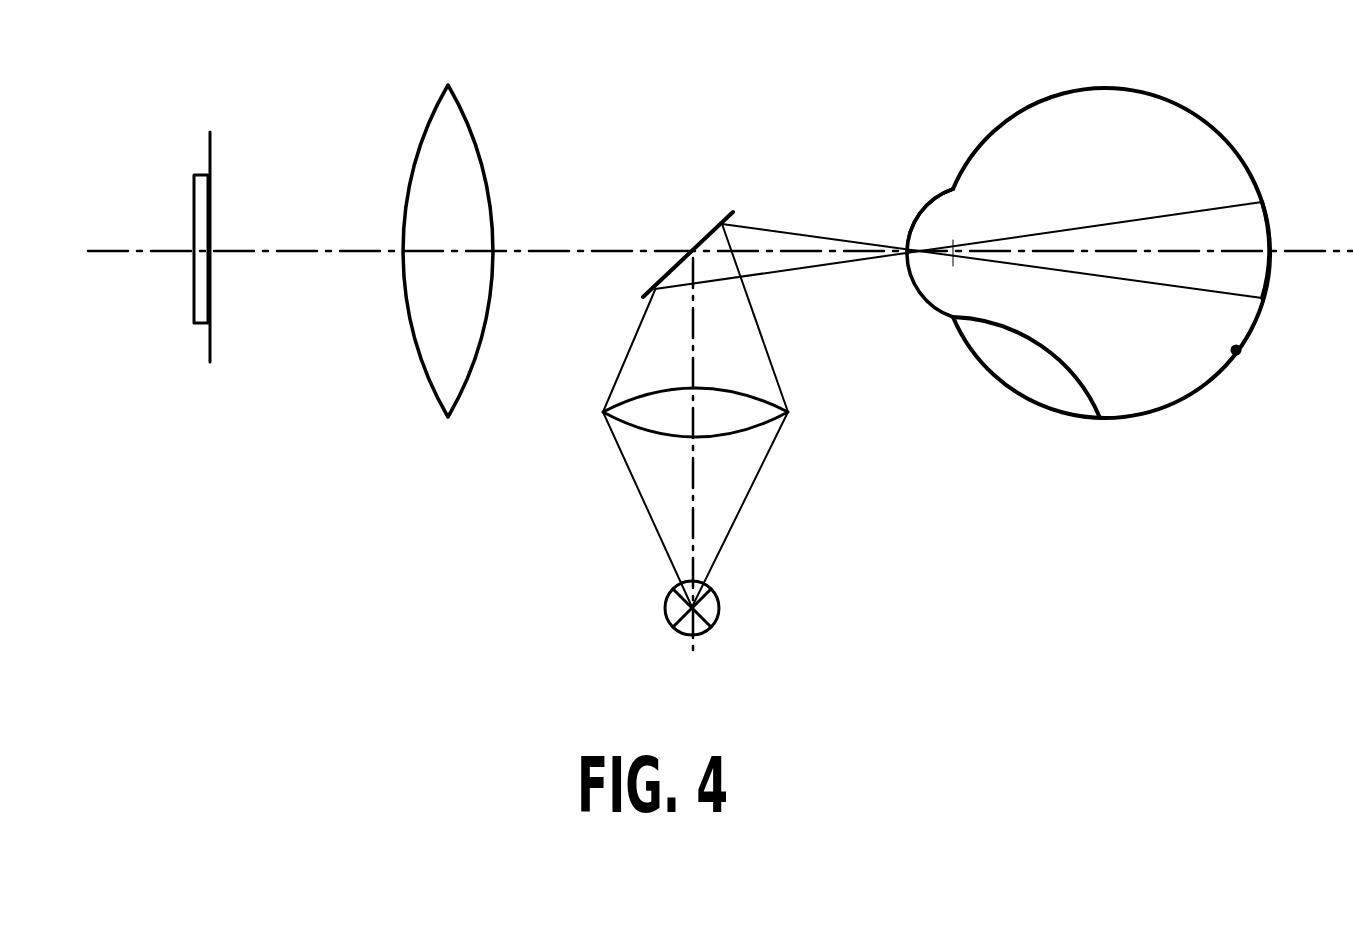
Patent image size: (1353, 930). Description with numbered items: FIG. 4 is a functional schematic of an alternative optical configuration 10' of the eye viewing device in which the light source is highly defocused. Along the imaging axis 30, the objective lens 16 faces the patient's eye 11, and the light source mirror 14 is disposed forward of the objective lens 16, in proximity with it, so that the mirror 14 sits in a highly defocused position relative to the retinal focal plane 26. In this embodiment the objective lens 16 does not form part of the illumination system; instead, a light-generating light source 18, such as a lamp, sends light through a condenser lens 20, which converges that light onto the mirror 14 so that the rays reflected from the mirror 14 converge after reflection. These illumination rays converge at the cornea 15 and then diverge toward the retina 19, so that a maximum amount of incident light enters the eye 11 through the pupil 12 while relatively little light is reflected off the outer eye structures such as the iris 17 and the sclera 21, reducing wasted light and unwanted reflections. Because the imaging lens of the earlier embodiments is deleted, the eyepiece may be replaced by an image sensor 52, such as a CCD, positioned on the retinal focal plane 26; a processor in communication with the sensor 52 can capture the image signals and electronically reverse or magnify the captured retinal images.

The ophthalmoscope optical system 10' is at (719, 53).
The eye 11 is at (1175, 88).
The pupil 12 is at (947, 285).
The light source mirror 14 is at (705, 230).
The cornea 15 is at (916, 293).
The objective lens 16 is at (401, 226).
The iris 17 is at (950, 196).
The light-generating light source 18 is at (666, 612).
The retina 19 is at (1237, 352).
The condenser lens 20 is at (642, 434).
The sclera 21 is at (978, 362).
The retinal focal plane 26 is at (208, 341).
The imaging axis 30 is at (540, 250).
The image sensor 52 is at (193, 207).